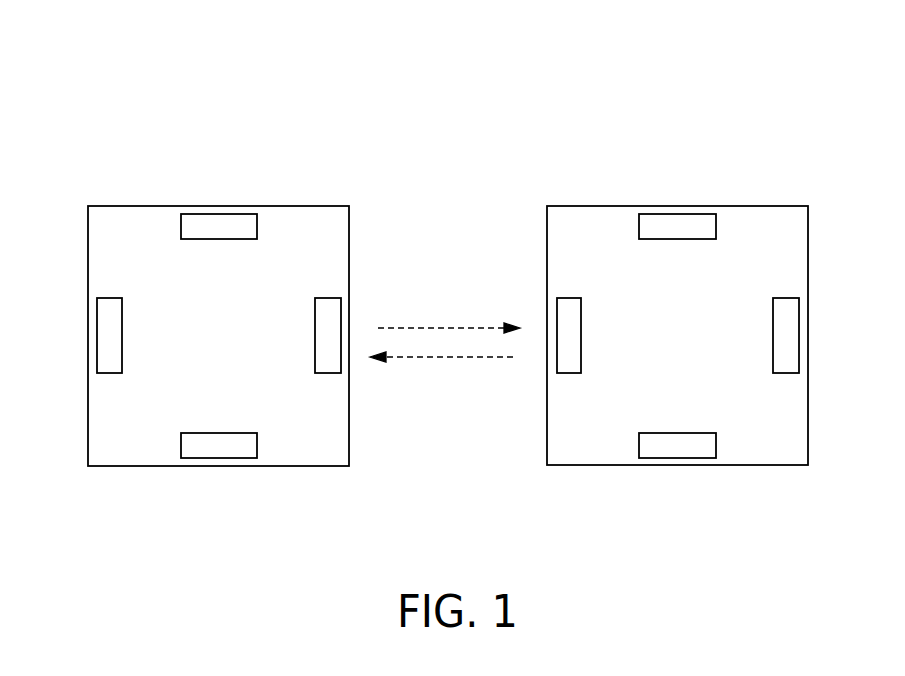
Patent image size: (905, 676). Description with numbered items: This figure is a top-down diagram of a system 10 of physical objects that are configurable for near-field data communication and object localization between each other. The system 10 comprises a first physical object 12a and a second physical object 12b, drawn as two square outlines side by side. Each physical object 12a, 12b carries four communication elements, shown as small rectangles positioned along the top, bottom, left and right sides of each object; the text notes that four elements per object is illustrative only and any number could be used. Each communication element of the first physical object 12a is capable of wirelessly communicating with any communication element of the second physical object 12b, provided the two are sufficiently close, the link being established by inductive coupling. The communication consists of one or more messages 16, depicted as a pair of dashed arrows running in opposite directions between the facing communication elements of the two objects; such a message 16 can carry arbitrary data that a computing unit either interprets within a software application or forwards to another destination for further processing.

The system 10 is at (128, 102).
The first physical object 12a is at (330, 466).
The second physical object 12b is at (787, 465).
The message 16 is at (447, 367).